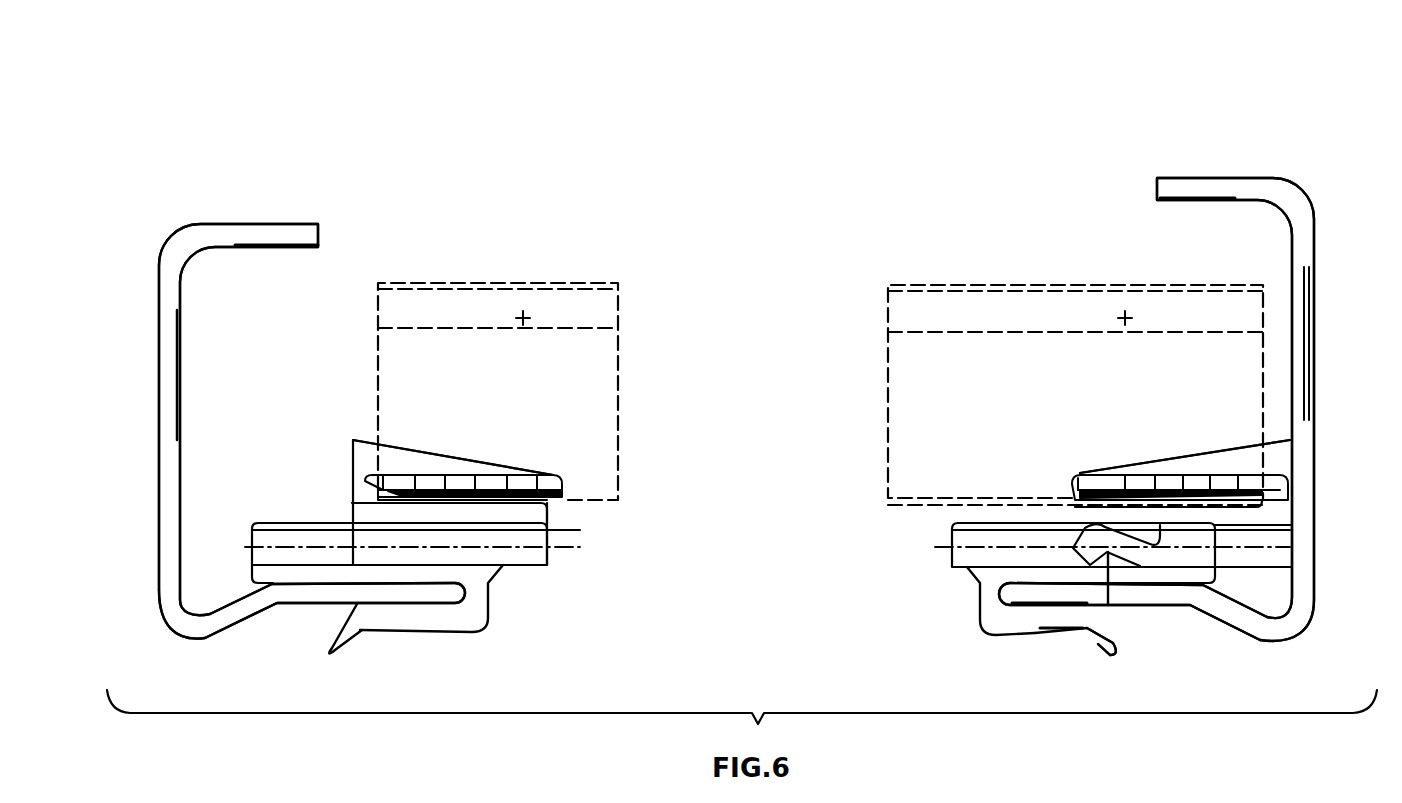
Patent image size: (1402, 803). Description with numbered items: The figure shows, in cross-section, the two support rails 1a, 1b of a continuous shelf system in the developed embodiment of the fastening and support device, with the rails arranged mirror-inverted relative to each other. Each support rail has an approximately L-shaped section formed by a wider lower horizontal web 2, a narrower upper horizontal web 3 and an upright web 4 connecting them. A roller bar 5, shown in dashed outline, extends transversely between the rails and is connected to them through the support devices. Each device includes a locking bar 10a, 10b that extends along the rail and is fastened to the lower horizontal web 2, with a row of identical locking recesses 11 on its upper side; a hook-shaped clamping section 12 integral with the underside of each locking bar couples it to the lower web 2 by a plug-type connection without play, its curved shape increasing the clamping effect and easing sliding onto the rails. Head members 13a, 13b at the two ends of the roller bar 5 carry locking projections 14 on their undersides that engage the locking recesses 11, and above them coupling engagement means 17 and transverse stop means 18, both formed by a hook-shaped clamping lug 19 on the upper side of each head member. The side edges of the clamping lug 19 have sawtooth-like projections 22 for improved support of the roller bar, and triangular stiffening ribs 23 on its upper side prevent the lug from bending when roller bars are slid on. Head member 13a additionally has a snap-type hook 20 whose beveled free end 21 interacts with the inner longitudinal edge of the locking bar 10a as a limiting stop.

The support rail 1a is at (1327, 356).
The support rail 1b is at (165, 380).
The lower horizontal web 2 is at (300, 600).
The upper horizontal web 3 is at (222, 240).
The upright web 4 is at (172, 590).
The roller bar 5 is at (506, 302).
The locking bar 10a is at (990, 590).
The locking bar 10b is at (486, 600).
The locking recesses 11 is at (282, 530).
The hook-shaped clamping section 12 is at (406, 624).
The head member 13a is at (1268, 507).
The head member 13b is at (352, 508).
The locking projections 14 is at (533, 560).
The coupling engagement means 17 is at (515, 490).
The transverse stop means 18 is at (353, 458).
The hook-shaped clamping lug 19 is at (475, 488).
The snap-type hook 20 is at (1272, 552).
The free end 21 is at (1110, 652).
The sawtooth-like projections 22 is at (446, 486).
The triangular stiffening ribs 23 is at (372, 450).